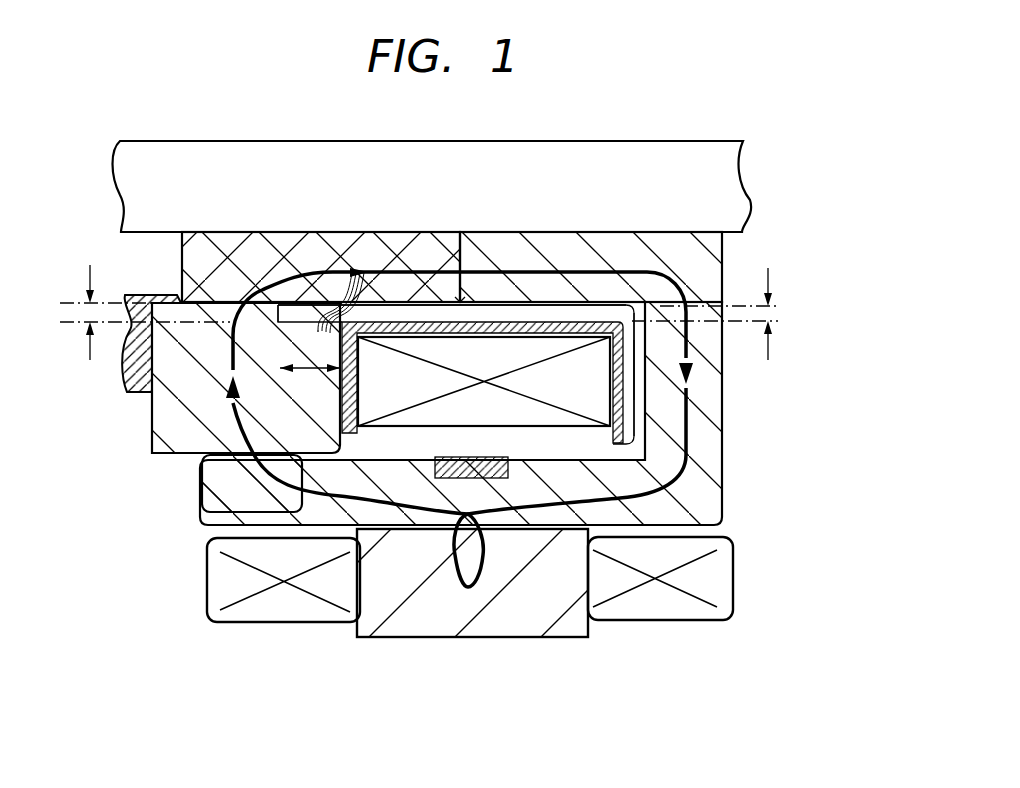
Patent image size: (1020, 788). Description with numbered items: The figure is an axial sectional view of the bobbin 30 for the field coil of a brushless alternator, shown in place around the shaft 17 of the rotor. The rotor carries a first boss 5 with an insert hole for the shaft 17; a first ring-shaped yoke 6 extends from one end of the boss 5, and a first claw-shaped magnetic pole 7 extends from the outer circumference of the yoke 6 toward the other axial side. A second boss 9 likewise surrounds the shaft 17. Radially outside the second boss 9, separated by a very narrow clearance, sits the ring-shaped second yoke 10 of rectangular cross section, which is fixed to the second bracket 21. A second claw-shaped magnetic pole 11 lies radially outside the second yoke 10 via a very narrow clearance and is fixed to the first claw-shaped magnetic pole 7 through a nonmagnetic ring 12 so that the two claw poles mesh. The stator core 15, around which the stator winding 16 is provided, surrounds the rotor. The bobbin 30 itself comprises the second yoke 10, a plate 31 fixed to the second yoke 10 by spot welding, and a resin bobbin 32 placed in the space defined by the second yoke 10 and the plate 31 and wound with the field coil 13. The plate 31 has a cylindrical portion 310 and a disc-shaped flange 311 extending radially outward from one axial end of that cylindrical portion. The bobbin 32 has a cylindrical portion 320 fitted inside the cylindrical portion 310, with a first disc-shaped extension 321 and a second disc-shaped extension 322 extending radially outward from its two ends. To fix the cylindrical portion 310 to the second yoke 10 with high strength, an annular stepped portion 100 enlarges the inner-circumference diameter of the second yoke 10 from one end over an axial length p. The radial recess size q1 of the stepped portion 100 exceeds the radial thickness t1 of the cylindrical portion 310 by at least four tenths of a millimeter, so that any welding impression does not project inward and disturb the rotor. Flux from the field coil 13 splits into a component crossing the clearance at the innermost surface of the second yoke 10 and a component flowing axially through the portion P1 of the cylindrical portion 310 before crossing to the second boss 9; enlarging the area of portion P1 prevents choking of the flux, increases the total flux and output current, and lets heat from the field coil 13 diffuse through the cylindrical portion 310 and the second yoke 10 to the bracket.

The shaft 17 is at (158, 145).
The second boss 9 is at (182, 256).
The first boss 5 is at (723, 252).
The first ring-shaped yoke 6 is at (710, 403).
The stepped portion 100 is at (153, 422).
The second bracket 21 is at (130, 373).
The second yoke 10 is at (158, 423).
The cylindrical portion 310 is at (522, 305).
The cylindrical portion 320 is at (488, 320).
The plate 31 is at (637, 340).
The disc-shaped flange 311 is at (640, 370).
The bobbin 32 is at (628, 423).
The first disc-shaped extension 321 is at (693, 465).
The second disc-shaped extension 322 is at (352, 460).
The ring 12 is at (422, 478).
The field coil 13 is at (585, 432).
The stator core 15 is at (461, 623).
The stator winding 16 is at (333, 612).
The first claw-shaped magnetic pole 7 is at (628, 445).
The second claw-shaped magnetic pole 11 is at (187, 530).
The bobbin 30 is at (200, 522).
The portion P1 is at (275, 300).
The size of radial recess q1 is at (144, 312).
The radial thickness t1 is at (713, 314).
The axial length p is at (310, 357).